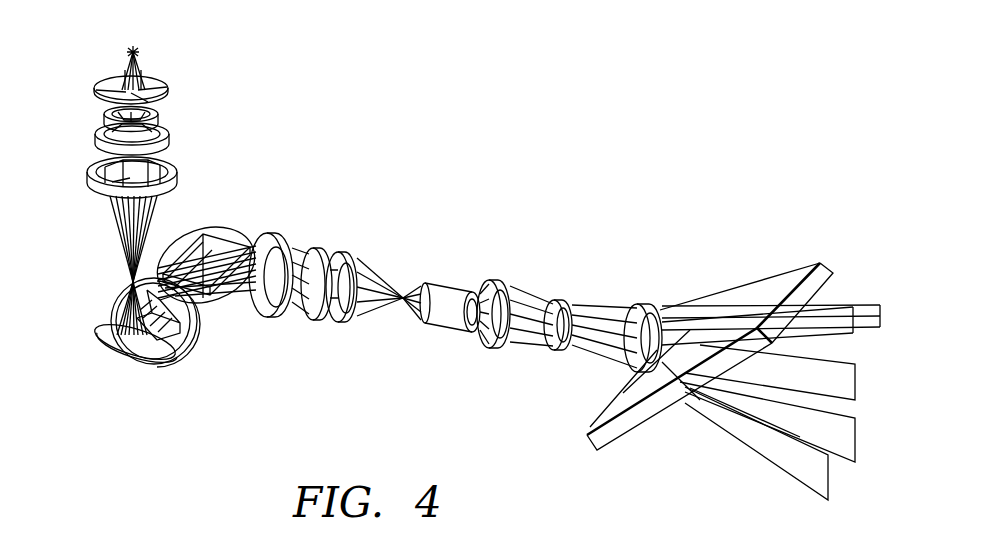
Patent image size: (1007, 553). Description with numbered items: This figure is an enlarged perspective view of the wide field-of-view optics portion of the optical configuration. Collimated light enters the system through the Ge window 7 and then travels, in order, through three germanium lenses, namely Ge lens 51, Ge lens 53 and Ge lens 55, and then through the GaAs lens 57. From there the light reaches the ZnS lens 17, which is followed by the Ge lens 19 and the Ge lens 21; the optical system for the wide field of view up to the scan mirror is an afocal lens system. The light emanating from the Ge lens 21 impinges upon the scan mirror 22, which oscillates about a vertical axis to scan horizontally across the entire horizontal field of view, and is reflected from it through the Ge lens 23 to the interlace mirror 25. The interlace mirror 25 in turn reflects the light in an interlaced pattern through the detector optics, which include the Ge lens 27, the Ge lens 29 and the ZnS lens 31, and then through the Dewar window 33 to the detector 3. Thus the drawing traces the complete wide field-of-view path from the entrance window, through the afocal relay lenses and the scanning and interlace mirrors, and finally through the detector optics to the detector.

The detector 3 is at (133, 52).
The Ge window 7 is at (830, 272).
The ZnS lens 17 is at (332, 325).
The Ge lens 19 is at (308, 322).
The Ge lens 21 is at (255, 313).
The scan mirror 22 is at (217, 228).
The Ge lens 23 is at (192, 347).
The interlace mirror 25 is at (127, 352).
The Ge lens 27 is at (87, 177).
The Ge lens 29 is at (95, 140).
The ZnS lens 31 is at (105, 114).
The Dewar window 33 is at (95, 86).
The Ge lens 51 is at (651, 303).
The Ge lens 53 is at (551, 352).
The Ge lens 55 is at (487, 349).
The GaAs lens 57 is at (441, 334).